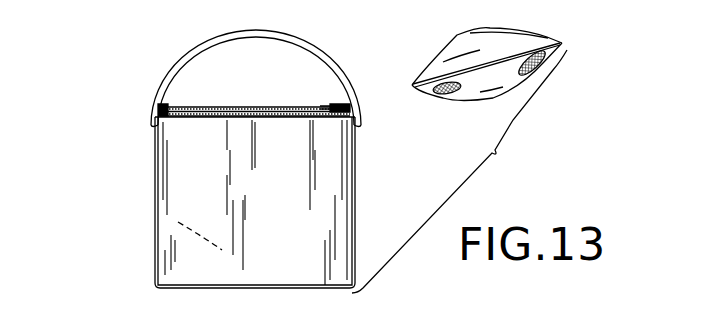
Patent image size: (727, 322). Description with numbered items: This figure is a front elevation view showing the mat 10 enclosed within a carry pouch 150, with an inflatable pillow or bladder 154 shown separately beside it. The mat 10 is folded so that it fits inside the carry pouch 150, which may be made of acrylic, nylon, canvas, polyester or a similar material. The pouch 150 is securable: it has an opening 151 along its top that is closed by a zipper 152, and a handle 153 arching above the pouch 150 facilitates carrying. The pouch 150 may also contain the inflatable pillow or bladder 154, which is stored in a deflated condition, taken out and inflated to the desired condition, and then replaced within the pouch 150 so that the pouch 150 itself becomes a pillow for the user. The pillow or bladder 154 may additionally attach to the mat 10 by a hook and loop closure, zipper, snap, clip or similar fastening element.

The mat 10 is at (178, 222).
The carry pouch 150 is at (192, 195).
The opening 151 is at (260, 108).
The zipper 152 is at (188, 108).
The handle 153 is at (228, 38).
The inflatable pillow or bladder 154 is at (455, 50).